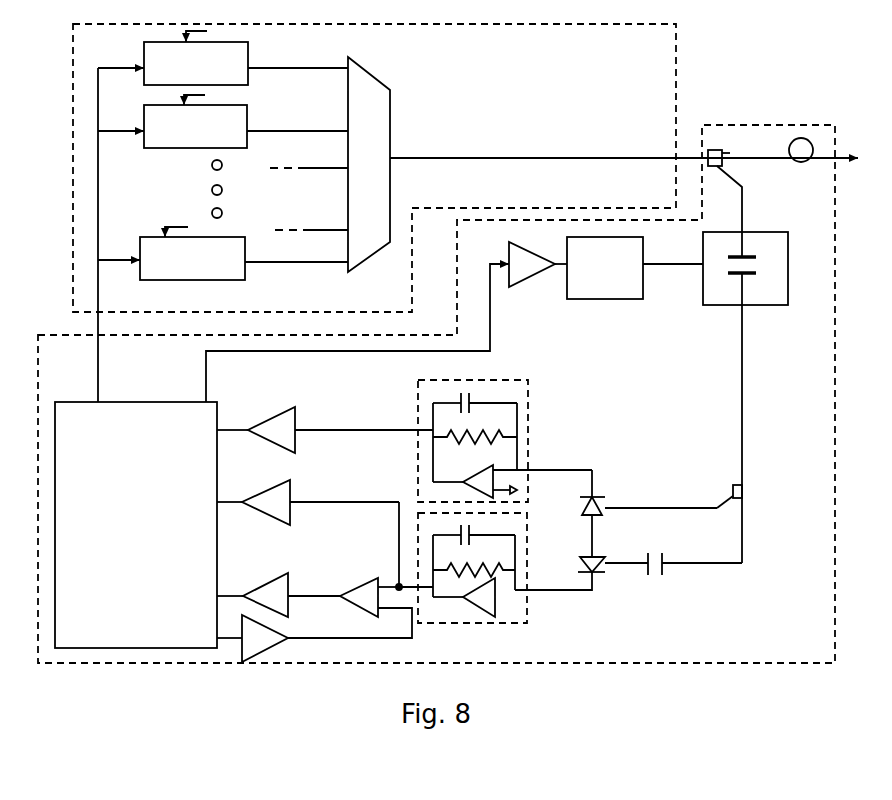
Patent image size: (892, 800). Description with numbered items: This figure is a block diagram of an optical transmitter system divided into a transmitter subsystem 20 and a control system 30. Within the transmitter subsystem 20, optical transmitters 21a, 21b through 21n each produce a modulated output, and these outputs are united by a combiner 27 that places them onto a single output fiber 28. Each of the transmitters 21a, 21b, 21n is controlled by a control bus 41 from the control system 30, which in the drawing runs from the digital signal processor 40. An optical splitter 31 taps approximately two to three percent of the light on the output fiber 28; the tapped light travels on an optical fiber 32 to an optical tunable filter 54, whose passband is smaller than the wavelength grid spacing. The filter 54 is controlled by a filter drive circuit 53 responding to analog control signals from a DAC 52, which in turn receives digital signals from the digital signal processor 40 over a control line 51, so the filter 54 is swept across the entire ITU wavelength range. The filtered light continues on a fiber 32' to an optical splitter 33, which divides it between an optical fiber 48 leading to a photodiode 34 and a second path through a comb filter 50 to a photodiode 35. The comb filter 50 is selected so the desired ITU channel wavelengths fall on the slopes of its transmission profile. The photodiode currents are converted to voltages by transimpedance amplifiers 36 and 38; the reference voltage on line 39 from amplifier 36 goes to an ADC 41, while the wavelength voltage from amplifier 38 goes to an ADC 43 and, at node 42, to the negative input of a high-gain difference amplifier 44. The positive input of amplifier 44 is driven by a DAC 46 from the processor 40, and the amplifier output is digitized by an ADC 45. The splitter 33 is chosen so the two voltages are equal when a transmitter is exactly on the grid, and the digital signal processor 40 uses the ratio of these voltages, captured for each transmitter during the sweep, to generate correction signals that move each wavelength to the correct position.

The transmitter subsystem 20 is at (617, 200).
The control system 30 is at (767, 638).
The optical transmitter 21a is at (250, 49).
The optical transmitter 21b is at (249, 111).
The optical transmitter 21n is at (247, 247).
The combiner 27 is at (390, 105).
The output fiber 28 is at (625, 155).
The optical splitter 31 is at (724, 157).
The optical fiber 32 is at (755, 199).
The tap fiber 32' is at (762, 434).
The optical tunable filter 54 is at (789, 253).
The DAC 52 is at (520, 280).
The filter drive circuit 53 is at (588, 300).
The control line 51 is at (378, 352).
The digital signal processor 40 is at (128, 408).
The control bus 41 is at (100, 206).
The reference voltage line 39 is at (347, 430).
The ADC 43 is at (268, 487).
The ADC 45 is at (266, 580).
The DAC 46 is at (268, 638).
The difference amplifier 44 is at (356, 599).
The node 42 is at (413, 590).
The transimpedance amplifier 36 is at (520, 382).
The transimpedance amplifier 38 is at (530, 622).
The photodiode 34 is at (580, 508).
The photodiode 35 is at (576, 562).
The optical fiber 48 is at (663, 506).
The comb filter 50 is at (652, 553).
The optical splitter 33 is at (744, 490).